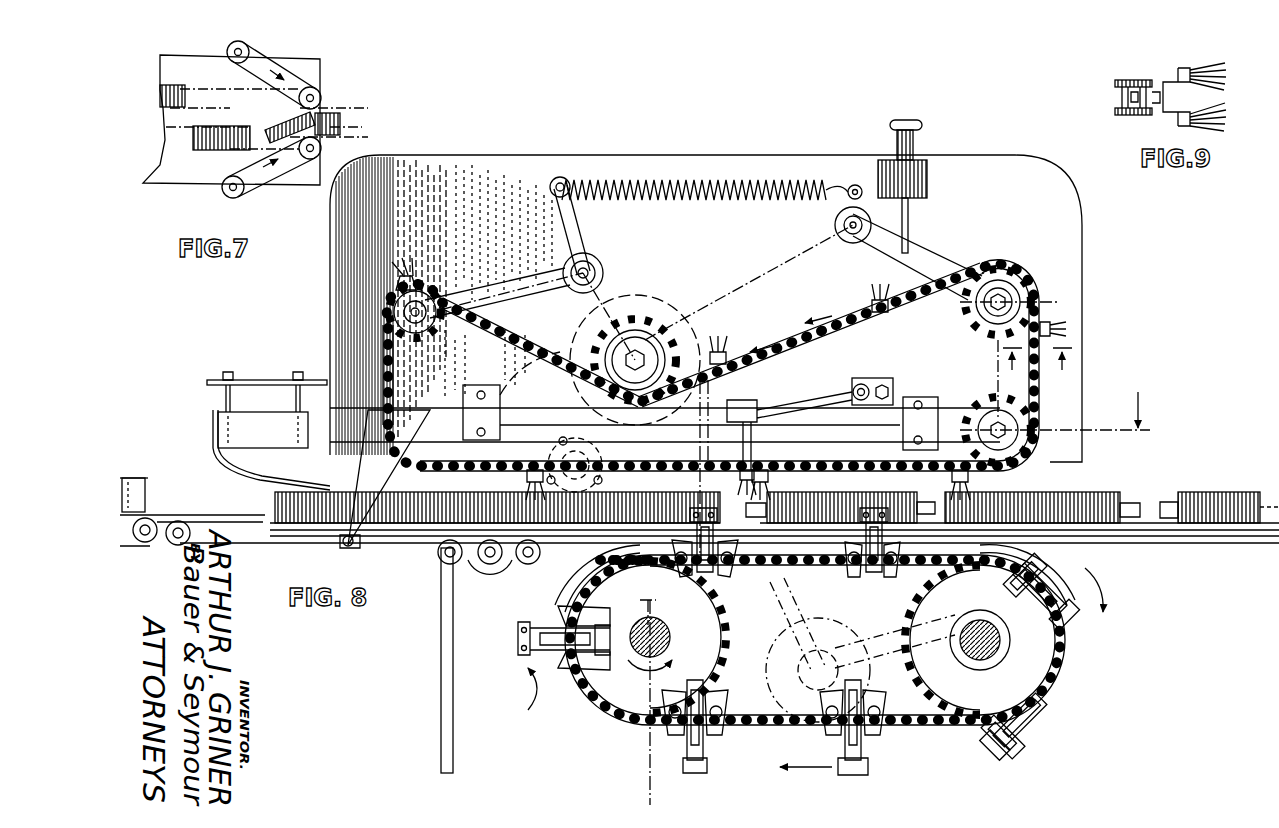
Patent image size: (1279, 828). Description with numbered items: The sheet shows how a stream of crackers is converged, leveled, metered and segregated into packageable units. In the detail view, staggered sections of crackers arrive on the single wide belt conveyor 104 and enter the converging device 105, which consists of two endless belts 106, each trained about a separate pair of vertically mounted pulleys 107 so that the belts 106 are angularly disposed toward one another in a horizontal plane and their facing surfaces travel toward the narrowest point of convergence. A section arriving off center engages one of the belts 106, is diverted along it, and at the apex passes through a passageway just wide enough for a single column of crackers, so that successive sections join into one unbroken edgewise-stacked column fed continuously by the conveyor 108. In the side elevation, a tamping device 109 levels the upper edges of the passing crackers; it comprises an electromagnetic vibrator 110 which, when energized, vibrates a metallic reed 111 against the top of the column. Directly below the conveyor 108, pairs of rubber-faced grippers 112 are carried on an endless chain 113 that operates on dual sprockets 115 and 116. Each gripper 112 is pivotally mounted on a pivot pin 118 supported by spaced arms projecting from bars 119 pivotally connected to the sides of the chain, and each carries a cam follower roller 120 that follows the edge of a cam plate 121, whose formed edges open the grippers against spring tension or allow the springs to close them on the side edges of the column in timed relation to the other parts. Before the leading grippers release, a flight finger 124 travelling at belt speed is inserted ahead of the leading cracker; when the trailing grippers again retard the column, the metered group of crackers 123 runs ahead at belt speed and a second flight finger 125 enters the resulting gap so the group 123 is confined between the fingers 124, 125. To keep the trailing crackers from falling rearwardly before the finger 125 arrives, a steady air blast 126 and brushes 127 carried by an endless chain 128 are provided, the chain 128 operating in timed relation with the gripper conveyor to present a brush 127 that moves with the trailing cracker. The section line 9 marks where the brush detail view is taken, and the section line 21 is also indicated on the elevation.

In FIG. 8, the section line 21 is at (710, 388).
In FIG. 8, the section line 9— 9 is at (1037, 369).
In FIG. 7, the single wide belt conveyor 104 is at (320, 64).
In FIG. 7, the converging device 105 is at (312, 50).
In FIG. 7, the endless belts 106 is at (272, 52).
In FIG. 8, the endless belts 106 is at (140, 488).
In FIG. 7, the vertically mounted pulleys 107 is at (240, 42).
In FIG. 8, the vertically mounted pulleys 107 is at (133, 477).
In FIG. 8, the conveyor 108 is at (265, 516).
In FIG. 8, the tamping device 109 is at (186, 409).
In FIG. 8, the electromagnetic vibrator 110 is at (262, 428).
In FIG. 8, the metallic reed 111 is at (252, 474).
In FIG. 8, the rubber-faced grippers 112 is at (519, 645).
In FIG. 8, the chain 113 is at (928, 728).
In FIG. 8, the dual sprocket 115 is at (645, 708).
In FIG. 8, the dual sprocket 116 is at (1048, 660).
In FIG. 8, the pivot pin 118 is at (675, 607).
In FIG. 8, the bars 119 is at (575, 620).
In FIG. 8, the cam follower roller 120 is at (690, 568).
In FIG. 8, the cam plate 121 is at (572, 582).
In FIG. 8, the metered group of crackers 123 is at (1060, 496).
In FIG. 8, the flight finger 124 is at (958, 487).
In FIG. 8, the second flight finger 125 is at (1170, 502).
In FIG. 8, the steady air blast 126 is at (750, 470).
In FIG. 9, the brushes 127 is at (1222, 108).
In FIG. 8, the brushes 127 is at (1065, 330).
In FIG. 9, the endless belt or chain 128 is at (1128, 113).
In FIG. 8, the endless belt or chain 128 is at (806, 326).